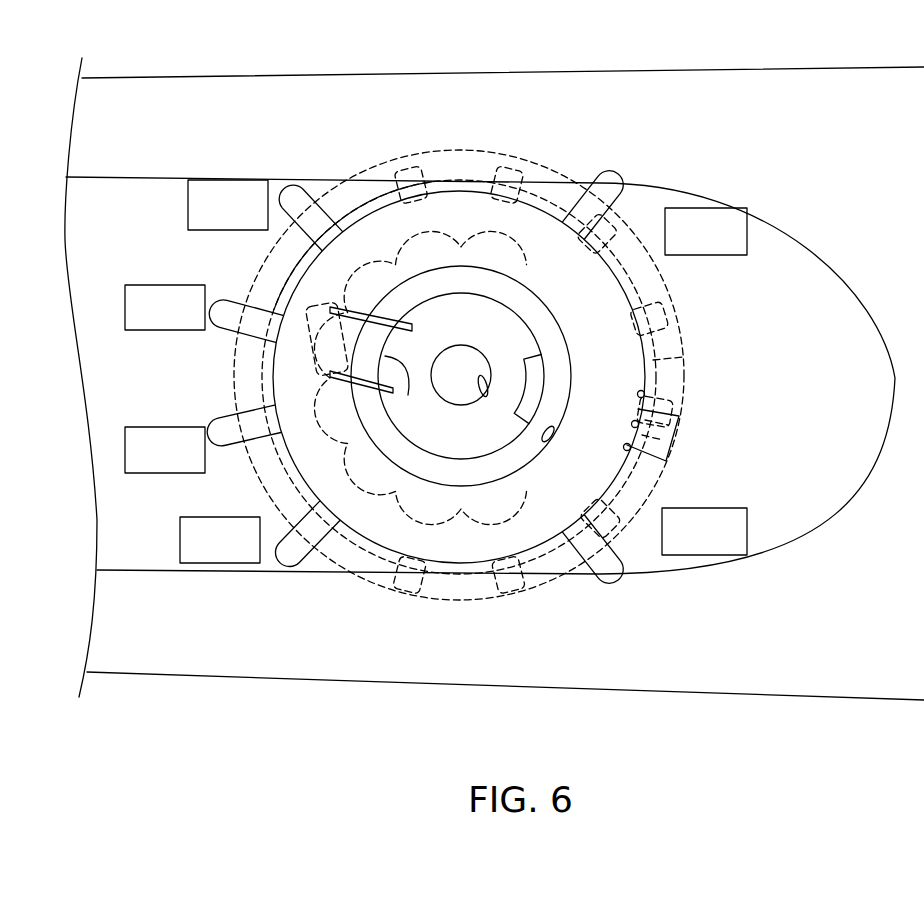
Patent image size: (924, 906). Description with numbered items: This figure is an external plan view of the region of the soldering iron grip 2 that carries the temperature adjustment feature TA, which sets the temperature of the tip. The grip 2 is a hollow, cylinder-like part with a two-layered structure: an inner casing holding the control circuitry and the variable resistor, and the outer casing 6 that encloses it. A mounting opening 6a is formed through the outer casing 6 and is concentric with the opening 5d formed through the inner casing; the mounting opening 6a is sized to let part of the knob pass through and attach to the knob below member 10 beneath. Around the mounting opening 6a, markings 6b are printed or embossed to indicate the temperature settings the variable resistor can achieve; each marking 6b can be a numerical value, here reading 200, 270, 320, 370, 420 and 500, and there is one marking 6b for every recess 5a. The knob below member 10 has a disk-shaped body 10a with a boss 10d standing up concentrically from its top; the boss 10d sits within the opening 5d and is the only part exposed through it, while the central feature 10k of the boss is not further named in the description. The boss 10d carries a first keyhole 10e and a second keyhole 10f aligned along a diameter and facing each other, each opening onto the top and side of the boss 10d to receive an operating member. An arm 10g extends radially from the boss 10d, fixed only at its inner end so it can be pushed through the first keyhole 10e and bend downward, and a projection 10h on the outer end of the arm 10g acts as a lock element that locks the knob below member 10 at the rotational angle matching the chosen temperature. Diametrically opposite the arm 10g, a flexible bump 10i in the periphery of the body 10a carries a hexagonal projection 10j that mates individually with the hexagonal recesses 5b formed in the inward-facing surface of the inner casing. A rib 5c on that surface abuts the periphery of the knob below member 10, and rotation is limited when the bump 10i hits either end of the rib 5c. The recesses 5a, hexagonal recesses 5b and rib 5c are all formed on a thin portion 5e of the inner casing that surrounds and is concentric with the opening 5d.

The grip 2 is at (214, 63).
The outer casing 6 is at (527, 80).
The mounting opening 6a is at (621, 300).
The markings 6b is at (202, 193).
The recesses 5a is at (503, 226).
The hexagonal recess 5b is at (413, 166).
The rib 5c is at (243, 380).
The opening 5d is at (545, 445).
The thin portion 5e is at (258, 284).
The knob below member 10 is at (644, 301).
The body 10a is at (684, 357).
The boss 10d is at (522, 322).
The first keyhole 10e is at (413, 328).
The second keyhole 10f is at (546, 398).
The arm 10g is at (408, 395).
The projection 10h is at (312, 352).
The bump 10i is at (658, 388).
The hexagonal projection 10j is at (662, 440).
The center hole 10k is at (483, 397).
The indication 200 is at (704, 531).
The indication 270 is at (220, 540).
The indication 320 is at (165, 450).
The indication 370 is at (165, 307).
The indication 420 is at (228, 205).
The indication 500 is at (706, 231).
The temperature adjustment feature TA is at (361, 184).